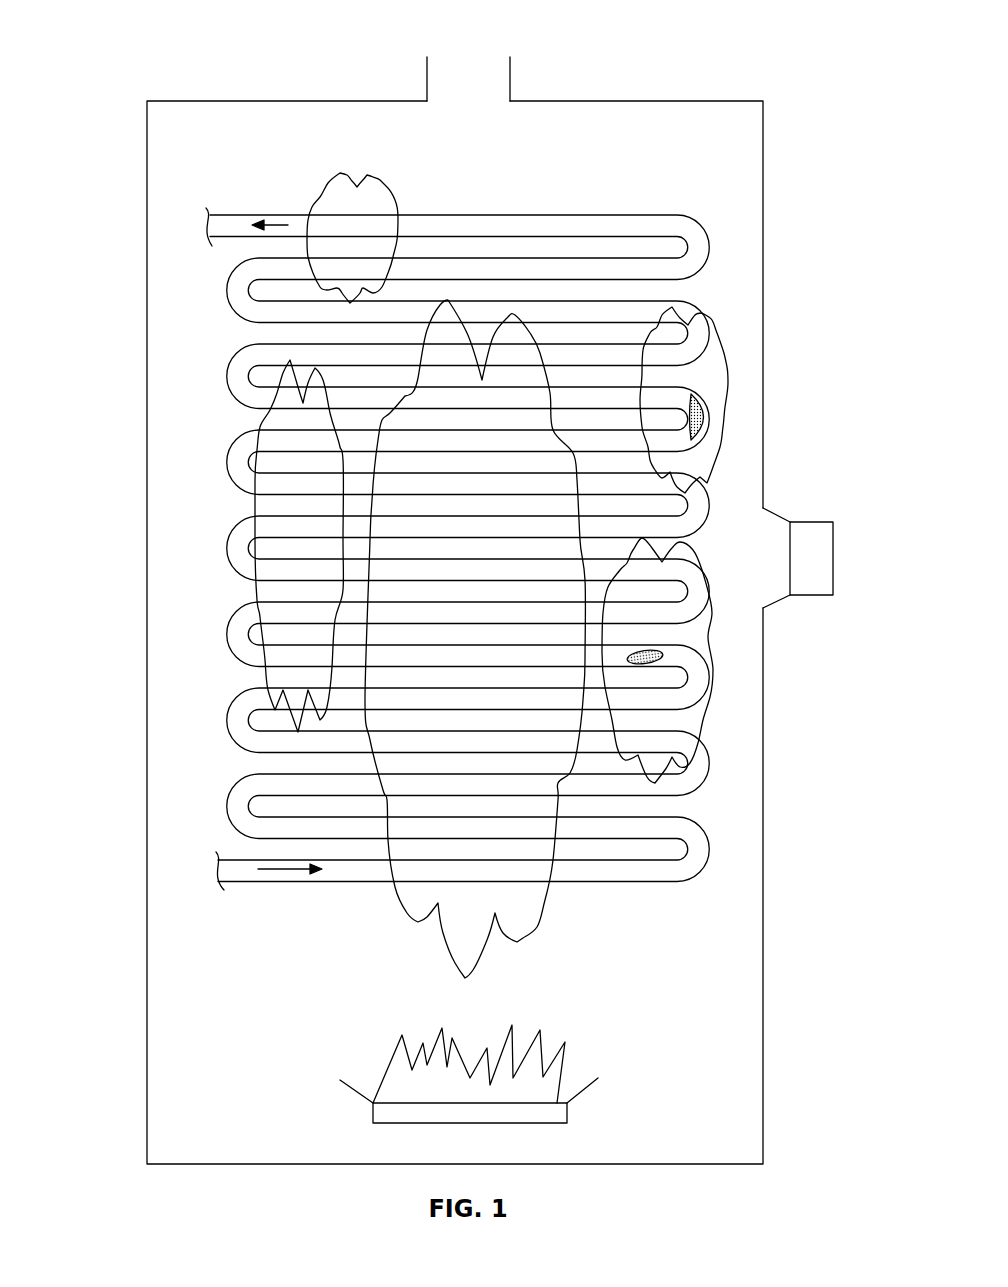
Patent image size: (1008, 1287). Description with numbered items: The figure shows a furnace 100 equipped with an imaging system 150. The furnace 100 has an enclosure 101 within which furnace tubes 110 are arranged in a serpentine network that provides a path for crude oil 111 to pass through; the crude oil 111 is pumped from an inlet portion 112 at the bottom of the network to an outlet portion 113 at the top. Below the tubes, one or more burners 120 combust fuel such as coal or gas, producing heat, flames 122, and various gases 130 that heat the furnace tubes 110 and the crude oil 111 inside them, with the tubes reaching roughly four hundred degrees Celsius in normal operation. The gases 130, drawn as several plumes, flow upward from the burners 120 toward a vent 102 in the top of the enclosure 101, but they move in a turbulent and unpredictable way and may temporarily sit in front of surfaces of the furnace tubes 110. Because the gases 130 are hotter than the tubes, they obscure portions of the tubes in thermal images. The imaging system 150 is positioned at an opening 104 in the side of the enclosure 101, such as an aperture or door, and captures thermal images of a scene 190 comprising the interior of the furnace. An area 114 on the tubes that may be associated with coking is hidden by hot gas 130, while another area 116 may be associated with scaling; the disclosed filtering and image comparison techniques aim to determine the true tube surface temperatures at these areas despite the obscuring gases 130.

The furnace 100 is at (180, 27).
The enclosure 101 is at (147, 147).
The vent 102 is at (512, 80).
The opening 104 is at (768, 507).
The furnace tubes 110 is at (732, 958).
The crude oil 111 is at (272, 225).
The inlet portion 112 is at (225, 882).
The outlet portion 113 is at (218, 214).
The area 114 is at (707, 413).
The area 116 is at (663, 653).
The burners 120 is at (608, 1080).
The flames 122 is at (341, 1027).
The gases 130 is at (340, 170).
The imaging system 150 is at (810, 521).
The scene 190 is at (772, 569).